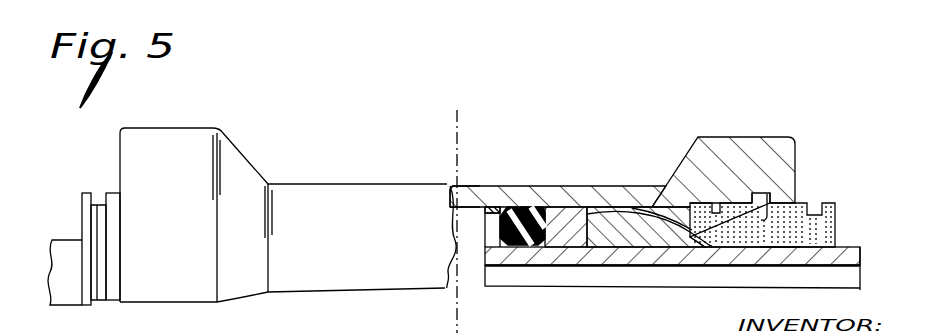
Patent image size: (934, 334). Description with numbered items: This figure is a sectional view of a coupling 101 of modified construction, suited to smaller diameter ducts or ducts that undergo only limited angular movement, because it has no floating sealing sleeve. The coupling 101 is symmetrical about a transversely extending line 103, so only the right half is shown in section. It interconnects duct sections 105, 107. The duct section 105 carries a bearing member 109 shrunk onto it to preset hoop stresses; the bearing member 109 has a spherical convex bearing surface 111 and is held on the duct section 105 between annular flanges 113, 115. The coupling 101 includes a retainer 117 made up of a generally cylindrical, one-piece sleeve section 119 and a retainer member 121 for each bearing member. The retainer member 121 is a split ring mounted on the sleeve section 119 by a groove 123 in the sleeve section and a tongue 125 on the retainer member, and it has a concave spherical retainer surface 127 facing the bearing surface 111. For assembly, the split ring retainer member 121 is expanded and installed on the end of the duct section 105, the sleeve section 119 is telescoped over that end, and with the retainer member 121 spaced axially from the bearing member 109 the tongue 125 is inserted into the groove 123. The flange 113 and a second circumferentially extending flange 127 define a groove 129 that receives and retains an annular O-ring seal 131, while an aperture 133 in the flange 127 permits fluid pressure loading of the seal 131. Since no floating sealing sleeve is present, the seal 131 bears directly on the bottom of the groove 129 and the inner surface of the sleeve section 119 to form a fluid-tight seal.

The coupling 101 is at (313, 156).
The transversely extending line 103 is at (455, 141).
The duct section 105 is at (882, 238).
The duct section 107 is at (64, 252).
The bearing member 109 is at (652, 229).
The spherical convex bearing surface 111 is at (683, 213).
The annular flange 113 is at (560, 222).
The annular flange 115 is at (777, 247).
The retainer 117 is at (591, 187).
The sleeve section 119 is at (477, 195).
The retainer member 121 is at (832, 215).
The groove 123 is at (766, 198).
The tongue 125 is at (776, 196).
The concave spherical retainer surface / circumferentially extending flange 127 is at (490, 209).
The groove 129 is at (547, 213).
The annular O-ring seal 131 is at (511, 207).
The aperture 133 is at (484, 236).